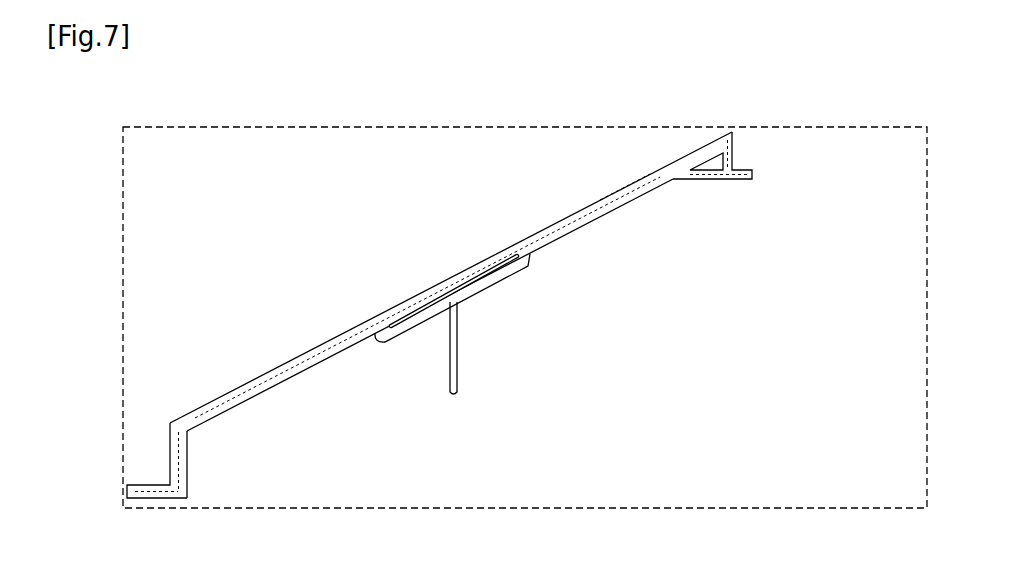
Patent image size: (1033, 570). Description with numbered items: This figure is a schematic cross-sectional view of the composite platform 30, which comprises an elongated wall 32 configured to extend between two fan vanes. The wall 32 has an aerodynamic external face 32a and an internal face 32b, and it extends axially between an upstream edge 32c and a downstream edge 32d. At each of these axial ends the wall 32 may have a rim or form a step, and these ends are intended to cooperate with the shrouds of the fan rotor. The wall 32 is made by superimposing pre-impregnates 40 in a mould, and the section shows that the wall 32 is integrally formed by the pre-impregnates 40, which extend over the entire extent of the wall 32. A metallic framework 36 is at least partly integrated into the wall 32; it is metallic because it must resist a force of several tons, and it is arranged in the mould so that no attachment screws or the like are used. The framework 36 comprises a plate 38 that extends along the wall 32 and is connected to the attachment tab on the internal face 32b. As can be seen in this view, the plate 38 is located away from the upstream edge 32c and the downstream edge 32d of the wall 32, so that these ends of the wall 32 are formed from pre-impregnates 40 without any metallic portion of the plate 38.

The composite platform 30 is at (788, 108).
The elongated wall 32 is at (411, 303).
The aerodynamic external face 32a is at (522, 242).
The internal face 32b is at (563, 234).
The upstream edge 32c is at (127, 491).
The downstream edge 32d is at (752, 178).
The metallic framework 36 is at (453, 402).
The plate 38 is at (420, 293).
The pre-impregnates 40 is at (640, 190).